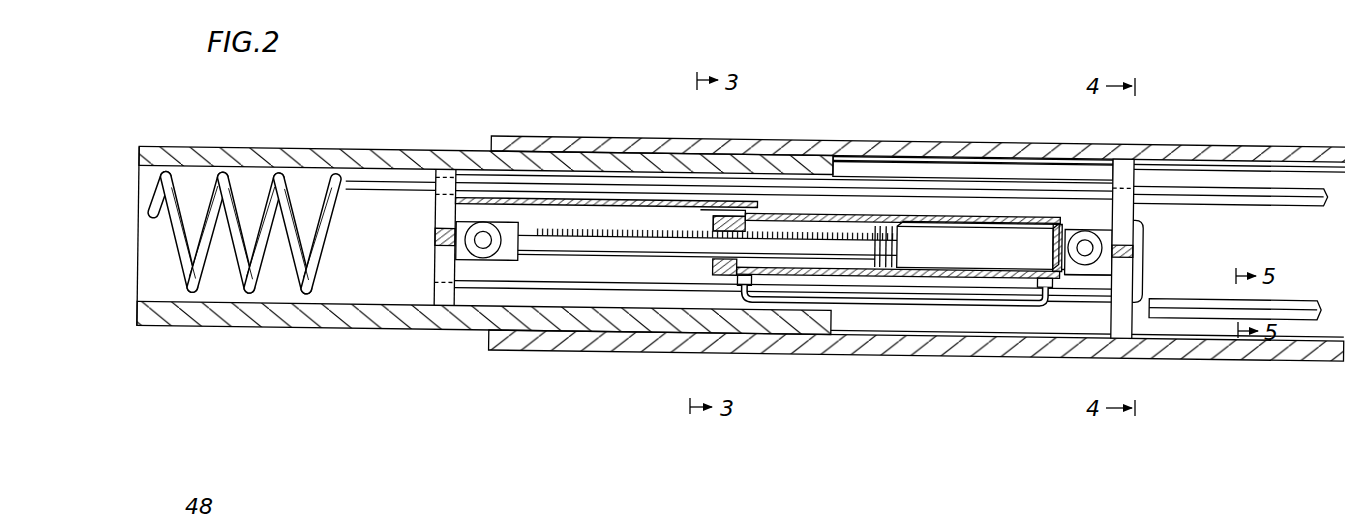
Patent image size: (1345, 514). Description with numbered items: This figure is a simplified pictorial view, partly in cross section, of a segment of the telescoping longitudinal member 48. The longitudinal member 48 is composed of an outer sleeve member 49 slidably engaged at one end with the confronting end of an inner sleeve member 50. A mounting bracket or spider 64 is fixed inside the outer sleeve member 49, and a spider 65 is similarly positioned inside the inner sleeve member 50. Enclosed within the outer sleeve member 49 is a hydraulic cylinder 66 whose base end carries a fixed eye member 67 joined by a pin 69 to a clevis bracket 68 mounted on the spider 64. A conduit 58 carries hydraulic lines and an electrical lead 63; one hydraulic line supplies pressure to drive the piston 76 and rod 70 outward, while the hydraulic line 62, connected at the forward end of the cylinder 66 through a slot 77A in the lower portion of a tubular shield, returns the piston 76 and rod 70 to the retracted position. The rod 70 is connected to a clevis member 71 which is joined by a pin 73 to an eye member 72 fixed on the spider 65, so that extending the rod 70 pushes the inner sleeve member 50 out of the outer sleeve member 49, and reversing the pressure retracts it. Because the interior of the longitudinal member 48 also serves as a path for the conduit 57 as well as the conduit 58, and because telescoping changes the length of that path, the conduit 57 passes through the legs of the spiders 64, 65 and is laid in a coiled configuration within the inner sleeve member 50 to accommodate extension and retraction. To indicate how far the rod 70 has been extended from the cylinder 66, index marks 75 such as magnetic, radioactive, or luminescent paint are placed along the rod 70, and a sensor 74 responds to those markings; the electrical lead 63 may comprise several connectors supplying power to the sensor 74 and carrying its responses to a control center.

The longitudinal member 48 is at (985, 126).
The outer sleeve member 49 is at (803, 134).
The inner sleeve member 50 is at (335, 151).
The conduit 57 is at (330, 245).
The conduit 58 is at (1183, 291).
The hydraulic line 62 is at (925, 304).
The electrical lead 63 is at (862, 210).
The spider 64 is at (1125, 321).
The spider 65 is at (442, 302).
The hydraulic cylinder 66 is at (940, 209).
The eye member 67 is at (1073, 222).
The clevis bracket 68 is at (1090, 269).
The pin 69 is at (1087, 240).
The rod 70 is at (650, 255).
The clevis member 71 is at (504, 287).
The eye member 72 is at (473, 217).
The pin 73 is at (480, 247).
The sensor 74 is at (700, 217).
The index marks 75 is at (565, 227).
The piston 76 is at (902, 241).
The slot 77A is at (590, 290).